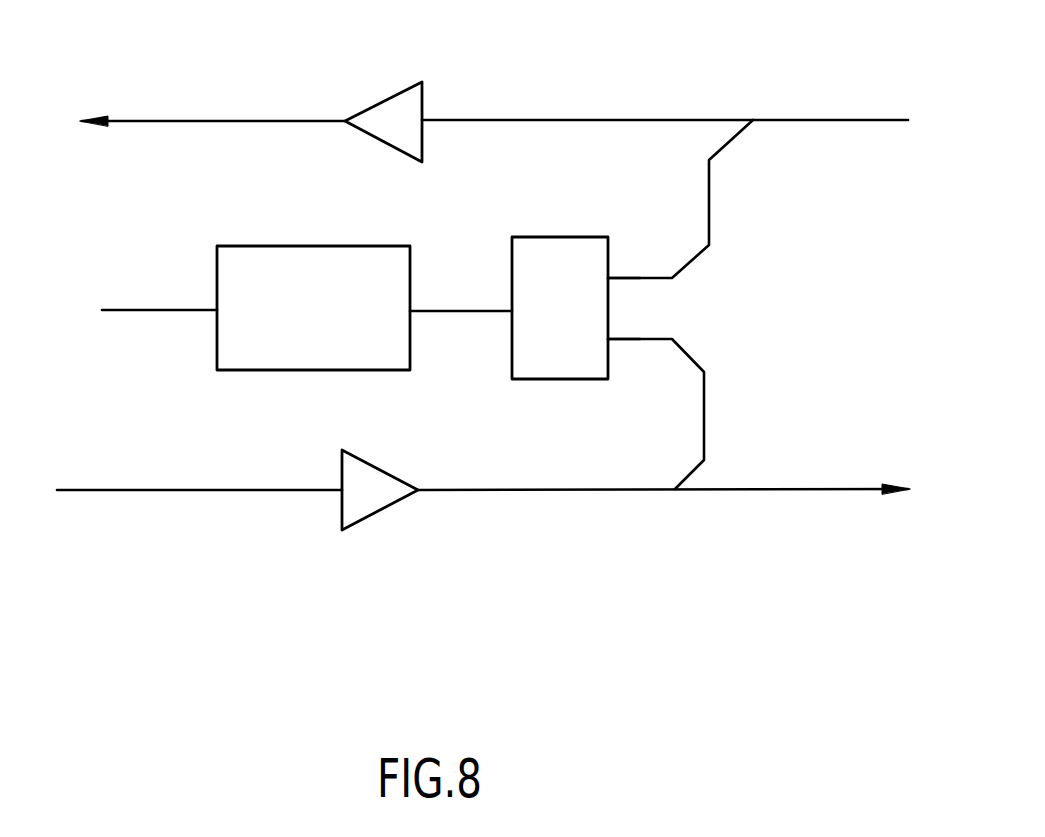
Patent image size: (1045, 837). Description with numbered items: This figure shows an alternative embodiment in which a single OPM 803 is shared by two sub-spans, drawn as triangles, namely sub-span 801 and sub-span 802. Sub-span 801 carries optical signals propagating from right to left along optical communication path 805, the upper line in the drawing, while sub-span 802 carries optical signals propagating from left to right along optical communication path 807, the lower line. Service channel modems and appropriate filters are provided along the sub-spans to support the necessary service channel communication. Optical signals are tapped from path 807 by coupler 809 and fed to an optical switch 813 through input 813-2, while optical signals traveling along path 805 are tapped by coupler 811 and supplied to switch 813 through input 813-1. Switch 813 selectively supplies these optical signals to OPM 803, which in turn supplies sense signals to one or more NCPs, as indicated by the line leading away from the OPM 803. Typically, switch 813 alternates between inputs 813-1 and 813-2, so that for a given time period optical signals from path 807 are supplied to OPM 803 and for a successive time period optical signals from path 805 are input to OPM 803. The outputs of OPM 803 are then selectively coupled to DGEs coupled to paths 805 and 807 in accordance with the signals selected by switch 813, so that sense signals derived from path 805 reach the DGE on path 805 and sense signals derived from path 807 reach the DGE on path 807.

The sub-span 801 is at (398, 93).
The sub-span 802 is at (375, 515).
The OPM 803 is at (285, 246).
The optical communication path 805 is at (580, 119).
The optical communication path 807 is at (582, 492).
The coupler 809 is at (697, 482).
The coupler 811 is at (732, 131).
The optical switch 813 is at (575, 237).
The input 813-1 is at (611, 276).
The input 813-2 is at (612, 341).